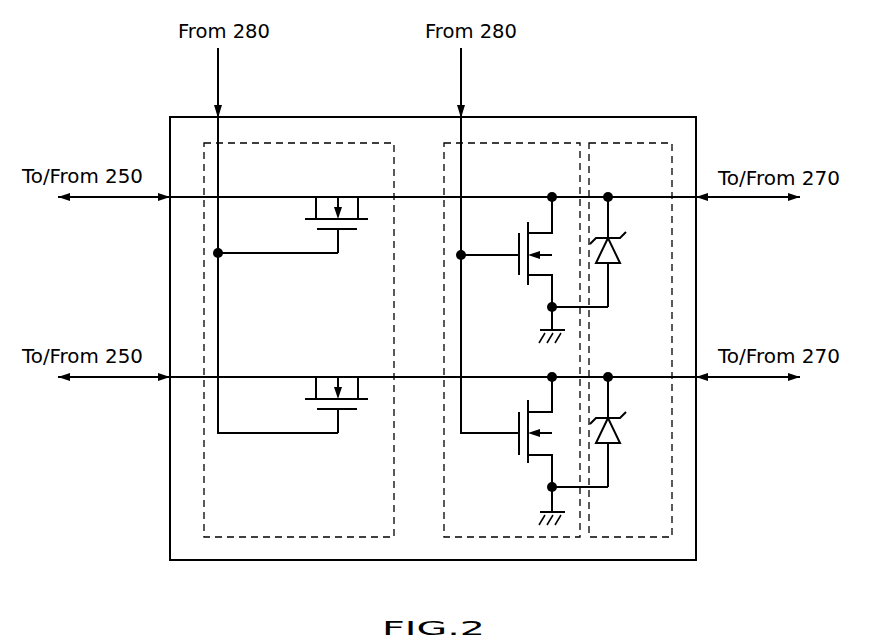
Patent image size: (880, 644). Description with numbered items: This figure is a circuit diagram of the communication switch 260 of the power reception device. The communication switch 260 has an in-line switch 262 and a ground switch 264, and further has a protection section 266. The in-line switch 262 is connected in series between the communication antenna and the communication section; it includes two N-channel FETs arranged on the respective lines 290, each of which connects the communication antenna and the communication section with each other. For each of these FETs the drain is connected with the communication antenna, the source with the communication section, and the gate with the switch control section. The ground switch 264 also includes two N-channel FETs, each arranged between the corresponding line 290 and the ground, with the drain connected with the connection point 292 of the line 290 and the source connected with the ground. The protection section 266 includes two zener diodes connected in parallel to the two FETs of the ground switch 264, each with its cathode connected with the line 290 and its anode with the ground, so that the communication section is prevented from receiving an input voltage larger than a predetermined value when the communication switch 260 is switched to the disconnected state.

The communication switch 260 is at (652, 117).
The in-line switch 262 is at (352, 143).
The ground switch 264 is at (445, 143).
The protection section 266 is at (598, 143).
The lines 290 is at (677, 197).
The connection point 292 is at (552, 376).